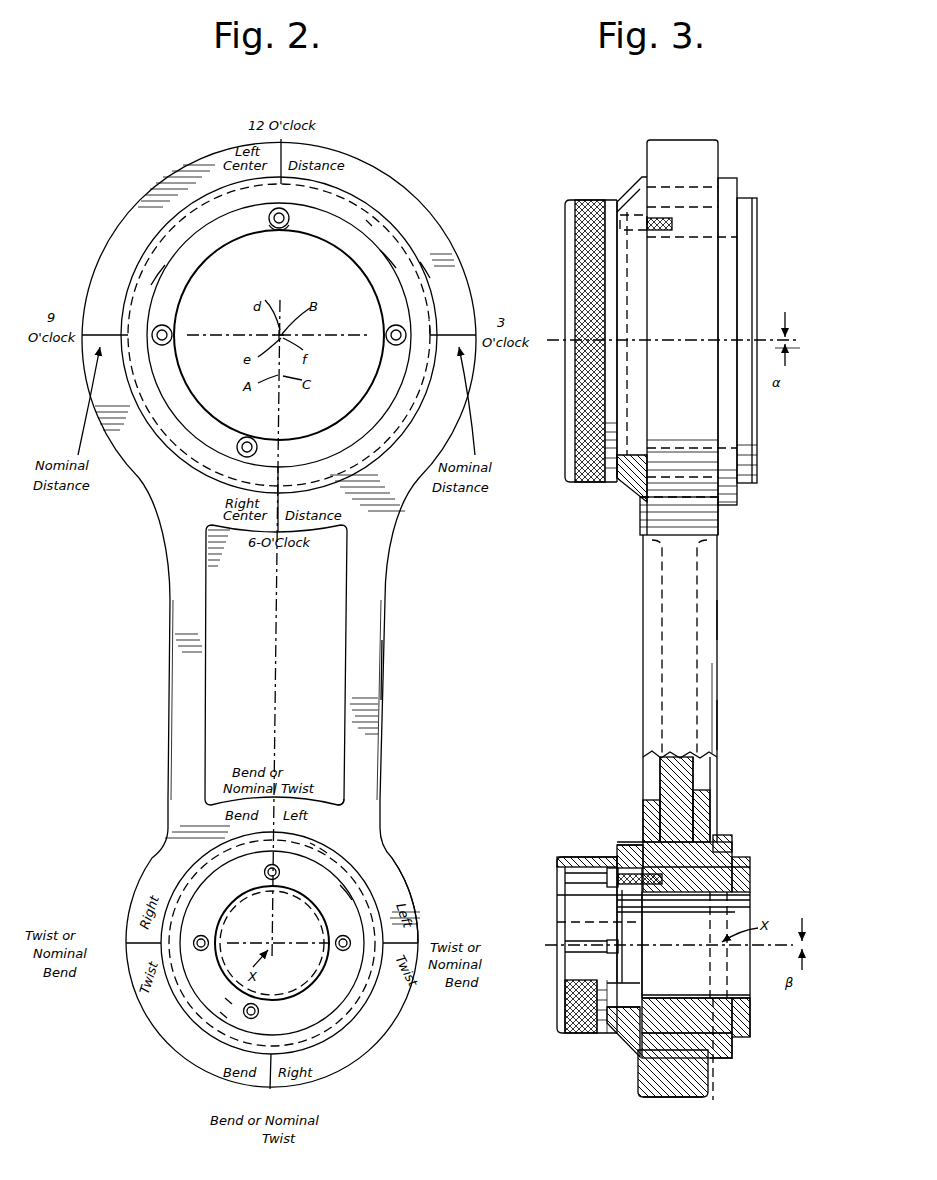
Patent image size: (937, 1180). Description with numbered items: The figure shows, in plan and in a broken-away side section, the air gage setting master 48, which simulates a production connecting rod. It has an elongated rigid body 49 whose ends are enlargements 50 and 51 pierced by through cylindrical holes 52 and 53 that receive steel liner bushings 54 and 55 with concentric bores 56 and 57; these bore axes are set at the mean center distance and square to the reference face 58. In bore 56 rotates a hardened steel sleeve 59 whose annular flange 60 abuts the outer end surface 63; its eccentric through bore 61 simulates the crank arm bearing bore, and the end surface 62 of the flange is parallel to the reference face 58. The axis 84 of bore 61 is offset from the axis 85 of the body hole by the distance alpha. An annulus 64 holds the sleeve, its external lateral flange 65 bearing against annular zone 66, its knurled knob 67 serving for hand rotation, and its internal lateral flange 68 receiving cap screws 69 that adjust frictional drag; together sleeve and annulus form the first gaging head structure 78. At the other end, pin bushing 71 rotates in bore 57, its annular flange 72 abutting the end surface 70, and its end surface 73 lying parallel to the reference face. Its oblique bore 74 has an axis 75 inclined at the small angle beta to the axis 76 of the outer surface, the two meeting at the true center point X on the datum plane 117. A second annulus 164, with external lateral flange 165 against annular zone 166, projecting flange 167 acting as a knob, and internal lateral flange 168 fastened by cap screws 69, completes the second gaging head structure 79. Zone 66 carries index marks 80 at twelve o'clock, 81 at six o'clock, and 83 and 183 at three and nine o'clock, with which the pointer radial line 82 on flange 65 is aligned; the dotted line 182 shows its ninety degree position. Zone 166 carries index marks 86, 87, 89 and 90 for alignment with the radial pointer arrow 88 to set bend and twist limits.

In FIG. 2, the air gage setting master 48 is at (390, 697).
In FIG. 3, the air gage setting master 48 is at (725, 600).
In FIG. 2, the elongated rigid body 49 is at (387, 623).
In FIG. 3, the elongated rigid body 49 is at (718, 558).
In FIG. 2, the end enlargement 50 is at (433, 197).
In FIG. 3, the end enlargement 50 is at (703, 136).
In FIG. 2, the end enlargement 51 is at (405, 1015).
In FIG. 3, the end enlargement 51 is at (660, 1097).
In FIG. 2, the through cylindrical hole 52 is at (222, 197).
In FIG. 3, the through cylindrical hole 52 is at (686, 188).
In FIG. 2, the through cylindrical hole 53 is at (342, 1020).
In FIG. 3, the through cylindrical hole 53 is at (667, 1045).
In FIG. 3, the steel liner bushing 54 is at (742, 500).
In FIG. 3, the steel liner bushing 55 is at (740, 1057).
In FIG. 3, the cylindrical bore 56 is at (730, 468).
In FIG. 3, the cylindrical bore 57 is at (727, 1020).
In FIG. 3, the reference face 58 is at (717, 618).
In FIG. 2, the hardened steel sleeve 59 is at (215, 248).
In FIG. 3, the hardened steel sleeve 59 is at (757, 207).
In FIG. 3, the annular flange 60 is at (750, 272).
In FIG. 2, the cylindrical through bore 61 is at (157, 283).
In FIG. 3, the cylindrical through bore 61 is at (727, 446).
In FIG. 3, the end surface 62 is at (757, 300).
In FIG. 3, the outer end surface 63 is at (737, 190).
In FIG. 2, the annulus 64 is at (366, 220).
In FIG. 3, the annulus 64 is at (612, 200).
In FIG. 2, the annular external lateral flange 65 is at (430, 278).
In FIG. 3, the annular external lateral flange 65 is at (634, 192).
In FIG. 2, the annular zone 66 is at (330, 183).
In FIG. 3, the annular zone 66 is at (643, 505).
In FIG. 2, the manually-engaging knob 67 is at (396, 268).
In FIG. 3, the manually-engaging knob 67 is at (593, 482).
In FIG. 2, the internal lateral flange 68 is at (350, 220).
In FIG. 3, the internal lateral flange 68 is at (627, 398).
In FIG. 2, the cap screws 69 is at (278, 230).
In FIG. 3, the cap screws 69 is at (620, 228).
In FIG. 3, the end surface 70 is at (733, 842).
In FIG. 3, the pin bushing 71 is at (752, 878).
In FIG. 3, the annular flange 72 is at (750, 858).
In FIG. 3, the end surface 73 is at (750, 1034).
In FIG. 2, the bore 74 is at (223, 970).
In FIG. 3, the bore 74 is at (748, 908).
In FIG. 3, the axis 75 is at (808, 936).
In FIG. 3, the axis 76 is at (822, 955).
In FIG. 2, the first gaging head structure 78 is at (138, 272).
In FIG. 3, the first gaging head structure 78 is at (582, 195).
In FIG. 2, the second gaging head structure 79 is at (220, 1012).
In FIG. 3, the second gaging head structure 79 is at (575, 1040).
In FIG. 2, the index mark 80 is at (302, 150).
In FIG. 2, the radial line 81 is at (268, 532).
In FIG. 2, the radial line 82 is at (264, 231).
In FIG. 2, the radial index mark 83 is at (462, 335).
In FIG. 3, the axis 84 is at (787, 330).
In FIG. 2, the axis 85 is at (275, 339).
In FIG. 3, the axis 85 is at (795, 349).
In FIG. 2, the radial index mark 86 is at (328, 795).
In FIG. 2, the radial index mark 87 is at (275, 1090).
In FIG. 2, the radial pointer arrow 88 is at (227, 853).
In FIG. 2, the radial index mark 89 is at (421, 944).
In FIG. 2, the radial index mark 90 is at (130, 937).
In FIG. 3, the datum plane 117 is at (722, 733).
In FIG. 2, the second annulus 164 is at (347, 872).
In FIG. 3, the second annulus 164 is at (613, 852).
In FIG. 2, the annular external lateral flange 165 is at (327, 853).
In FIG. 3, the annular external lateral flange 165 is at (622, 838).
In FIG. 2, the annular zone 166 is at (215, 828).
In FIG. 3, the annular zone 166 is at (630, 1063).
In FIG. 2, the cylindrical projecting flange 167 is at (352, 900).
In FIG. 3, the cylindrical projecting flange 167 is at (563, 1000).
In FIG. 2, the internal lateral flange 168 is at (225, 998).
In FIG. 3, the internal lateral flange 168 is at (620, 893).
In FIG. 2, the dotted line 182 is at (433, 328).
In FIG. 2, the radial index mark 183 is at (92, 333).